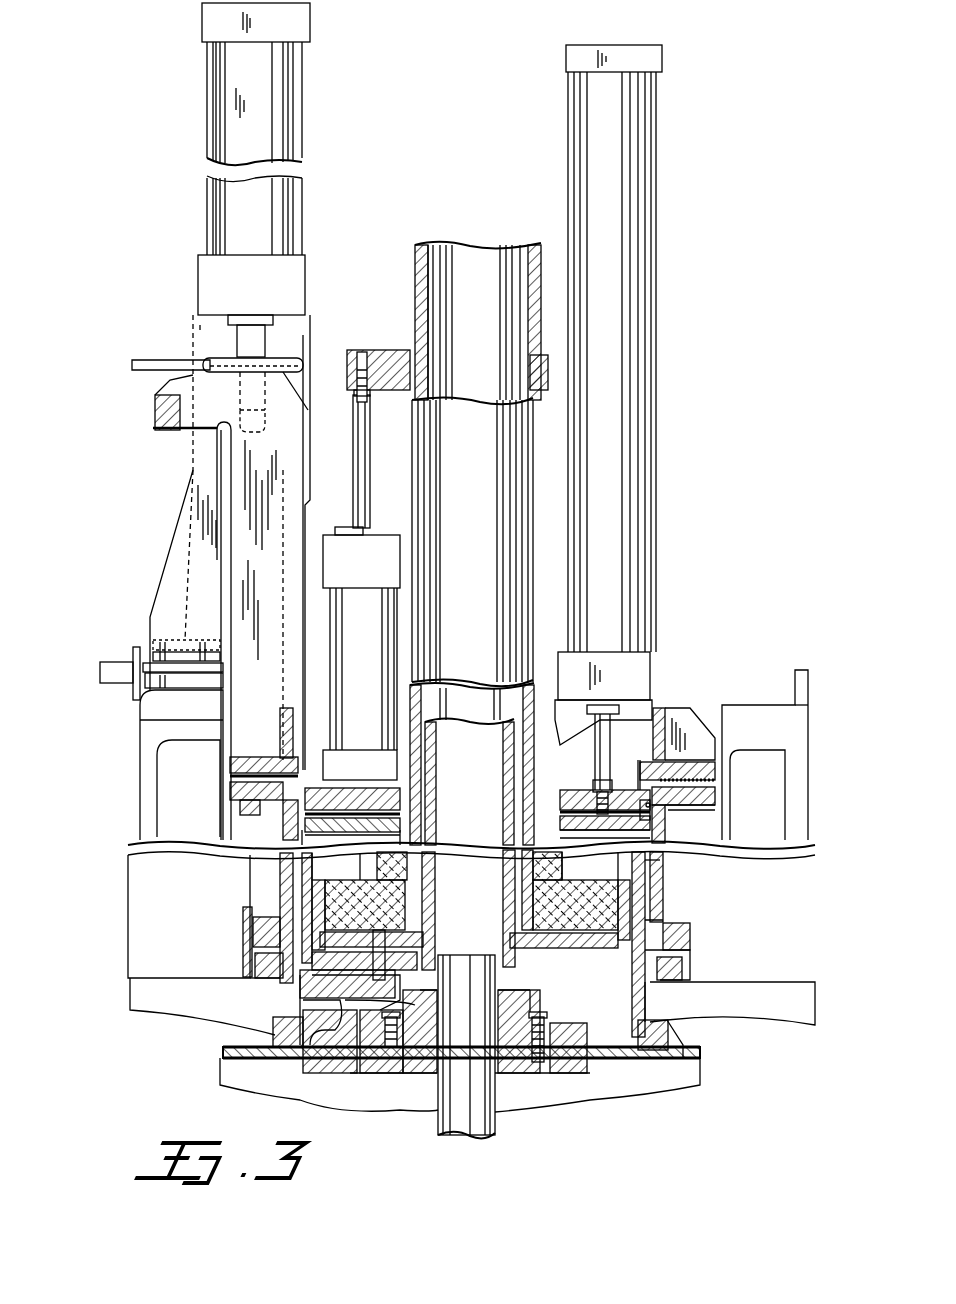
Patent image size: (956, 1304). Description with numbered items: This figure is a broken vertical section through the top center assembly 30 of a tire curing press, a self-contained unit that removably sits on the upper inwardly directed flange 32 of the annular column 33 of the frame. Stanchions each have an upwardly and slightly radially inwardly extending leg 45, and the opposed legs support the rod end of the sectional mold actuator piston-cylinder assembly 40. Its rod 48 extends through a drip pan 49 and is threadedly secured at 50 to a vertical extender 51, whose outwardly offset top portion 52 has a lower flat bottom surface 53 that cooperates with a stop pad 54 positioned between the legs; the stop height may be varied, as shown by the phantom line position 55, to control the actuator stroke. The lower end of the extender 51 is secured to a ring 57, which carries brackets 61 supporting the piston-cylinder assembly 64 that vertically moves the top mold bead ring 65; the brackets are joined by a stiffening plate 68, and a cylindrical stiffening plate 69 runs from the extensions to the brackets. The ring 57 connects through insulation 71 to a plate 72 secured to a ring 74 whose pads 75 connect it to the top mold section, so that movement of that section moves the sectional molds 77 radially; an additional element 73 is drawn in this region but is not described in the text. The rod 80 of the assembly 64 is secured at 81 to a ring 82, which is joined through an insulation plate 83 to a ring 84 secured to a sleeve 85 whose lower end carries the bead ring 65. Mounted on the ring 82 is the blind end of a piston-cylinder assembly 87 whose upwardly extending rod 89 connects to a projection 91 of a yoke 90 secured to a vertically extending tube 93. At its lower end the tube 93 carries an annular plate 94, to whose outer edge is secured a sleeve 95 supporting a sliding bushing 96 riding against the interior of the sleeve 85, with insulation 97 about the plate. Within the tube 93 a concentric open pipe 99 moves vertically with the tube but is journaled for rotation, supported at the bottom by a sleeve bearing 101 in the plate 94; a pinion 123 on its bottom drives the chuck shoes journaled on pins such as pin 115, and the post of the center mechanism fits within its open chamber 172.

The center assembly 30 is at (665, 572).
The upper inwardly directed flange 32 is at (180, 732).
The annular column 33 is at (150, 775).
The sectional mold actuator piston-cylinder assembly 40 is at (207, 142).
The stanchion leg 45 is at (170, 540).
The rod 48 is at (262, 352).
The drip pan 49 is at (300, 366).
The threaded connection 50 is at (265, 397).
The vertical extender 51 is at (222, 478).
The outwardly offset top portion 52 is at (160, 400).
The lower flat bottom surface 53 is at (160, 430).
The stop pad 54 is at (185, 650).
The phantom line position 55 is at (185, 640).
The ring 57 is at (240, 765).
The bracket 61 is at (690, 718).
The piston-cylinder assembly 64 is at (652, 415).
The top mold bead ring 65 is at (672, 1022).
The stiffening plate 68 is at (665, 712).
The cylindrical stiffening plate 69 is at (325, 719).
The insulation 71 is at (718, 778).
The plate 72 is at (712, 805).
The sleeve 73 is at (663, 880).
The ring 74 is at (688, 940).
The pads 75 is at (690, 965).
The sectional molds 77 is at (145, 1000).
The rod 80 is at (600, 758).
The securing connection 81 is at (597, 800).
The ring 82 is at (560, 805).
The insulation plate 83 is at (665, 822).
The ring 84 is at (553, 820).
The sleeve 85 is at (648, 858).
The piston-cylinder assembly 87 is at (303, 625).
The rod 89 is at (370, 460).
The yoke 90 is at (400, 350).
The projection 91 is at (358, 388).
The tube 93 is at (538, 520).
The annular plate 94 is at (580, 948).
The sleeve 95 is at (625, 945).
The sliding bushing 96 is at (660, 900).
The insulation 97 is at (575, 882).
The pipe 99 is at (475, 250).
The sleeve bearing 101 is at (510, 945).
The pin 115 is at (408, 895).
The pinion 123 is at (546, 1018).
The open chamber 172 is at (469, 782).